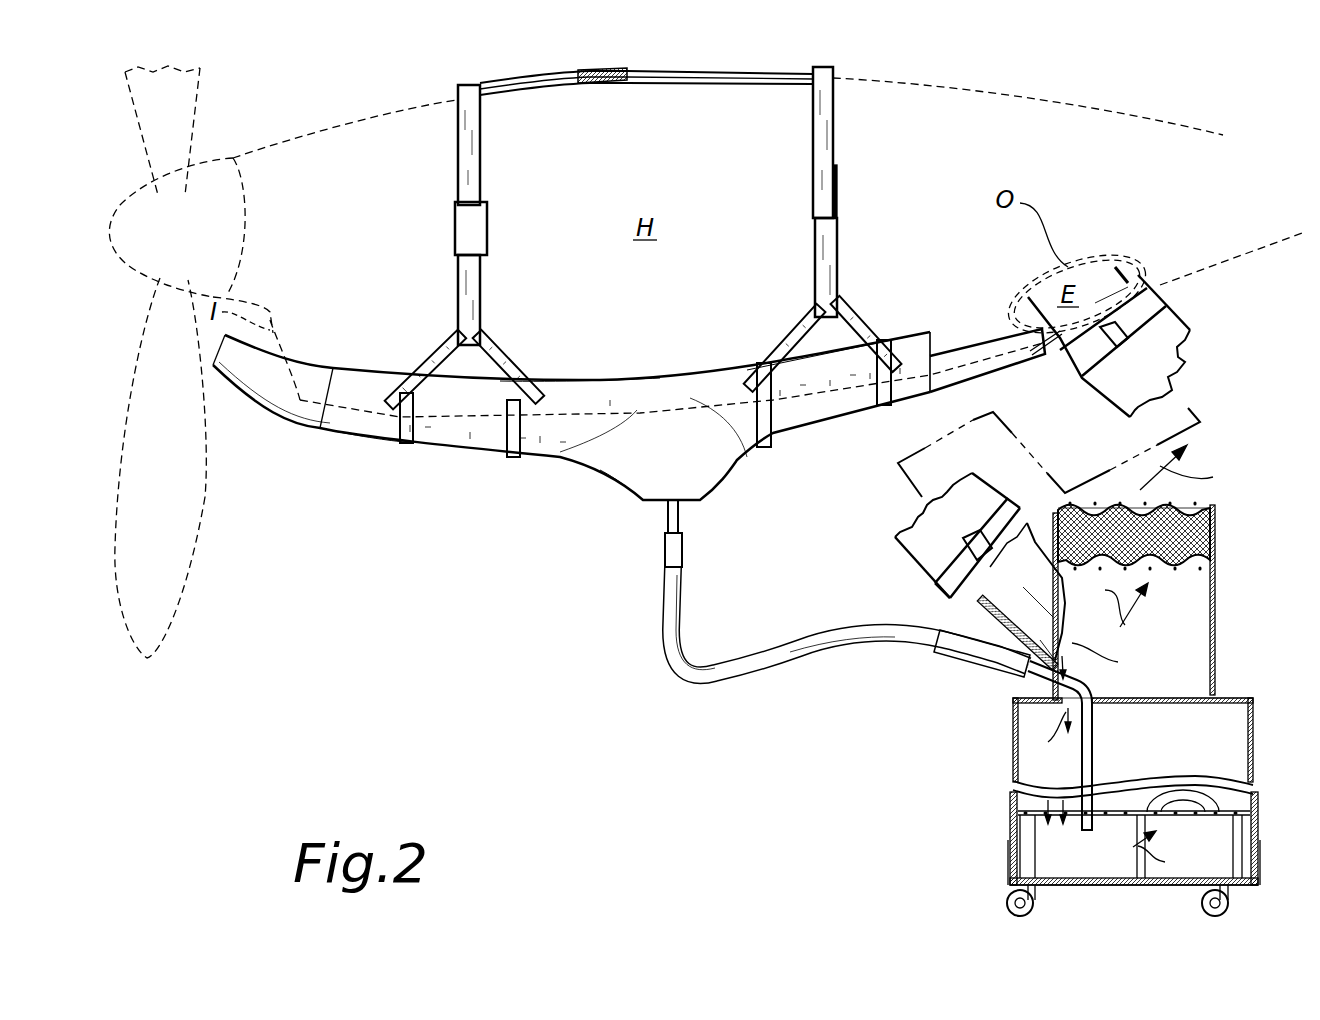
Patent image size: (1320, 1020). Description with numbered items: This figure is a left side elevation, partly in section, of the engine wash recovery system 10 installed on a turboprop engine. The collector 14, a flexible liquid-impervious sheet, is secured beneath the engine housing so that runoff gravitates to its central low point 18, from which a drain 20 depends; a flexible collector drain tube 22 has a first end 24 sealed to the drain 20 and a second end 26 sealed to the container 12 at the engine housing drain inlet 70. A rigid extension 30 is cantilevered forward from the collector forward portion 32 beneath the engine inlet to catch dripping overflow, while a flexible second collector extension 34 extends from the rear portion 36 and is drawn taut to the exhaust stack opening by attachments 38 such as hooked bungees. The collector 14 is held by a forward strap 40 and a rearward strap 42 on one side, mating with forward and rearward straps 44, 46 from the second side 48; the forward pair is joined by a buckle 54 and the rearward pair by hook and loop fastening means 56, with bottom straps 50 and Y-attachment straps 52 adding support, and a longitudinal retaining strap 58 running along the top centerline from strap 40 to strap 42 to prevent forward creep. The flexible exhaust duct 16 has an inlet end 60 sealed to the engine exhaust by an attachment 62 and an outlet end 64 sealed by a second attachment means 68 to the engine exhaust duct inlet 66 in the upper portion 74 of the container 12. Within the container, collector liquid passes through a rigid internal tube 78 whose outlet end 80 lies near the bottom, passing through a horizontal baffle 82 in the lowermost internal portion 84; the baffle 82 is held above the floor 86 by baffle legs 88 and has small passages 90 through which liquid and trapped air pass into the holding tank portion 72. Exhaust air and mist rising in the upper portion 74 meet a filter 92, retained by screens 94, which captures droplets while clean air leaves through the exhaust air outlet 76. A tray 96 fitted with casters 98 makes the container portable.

The engine wash recovery system 10 is at (605, 710).
The container 12 is at (1013, 752).
The collector 14 is at (593, 409).
The exhaust duct 16 is at (918, 521).
The low point 18 is at (607, 490).
The drain 20 is at (681, 518).
The collector drain tube 22 is at (708, 684).
The first end 24 is at (664, 540).
The second end 26 is at (988, 668).
The rigid extension 30 is at (248, 398).
The collector forward portion 32 is at (345, 438).
The second collector extension 34 is at (977, 345).
The rear portion 36 is at (922, 396).
The attachments 38 is at (1030, 350).
The forward strap 40 is at (458, 140).
The rearward strap 42 is at (834, 147).
The mating forward strap 44 is at (458, 290).
The mating rearward strap 46 is at (838, 248).
The second side 48 is at (662, 372).
The bottom straps 50 is at (415, 445).
The Y-attachment straps 52 is at (447, 362).
The buckle 54 is at (455, 226).
The hook and loop fastening means 56 is at (608, 84).
The longitudinal retaining strap 58 is at (590, 70).
The inlet end 60 is at (1130, 272).
The attachment 62 is at (1073, 377).
The outlet end 64 is at (973, 608).
The engine exhaust duct inlet 66 is at (947, 644).
The second attachment means 68 is at (955, 553).
The engine housing drain inlet 70 is at (1027, 680).
The holding tank portion 72 is at (1187, 757).
The upper portion 74 is at (1217, 628).
The exhaust air outlet 76 is at (1216, 508).
The internal tube 78 is at (1093, 740).
The outlet end 80 is at (1080, 847).
The baffle 82 is at (1010, 800).
The lowermost internal portion 84 is at (1192, 845).
The floor 86 is at (1072, 876).
The baffle legs 88 is at (1036, 842).
The passages 90 is at (1153, 803).
The filter 92 is at (1197, 530).
The screens 94 is at (1088, 505).
The tray 96 is at (1010, 857).
The casters 98 is at (1200, 908).